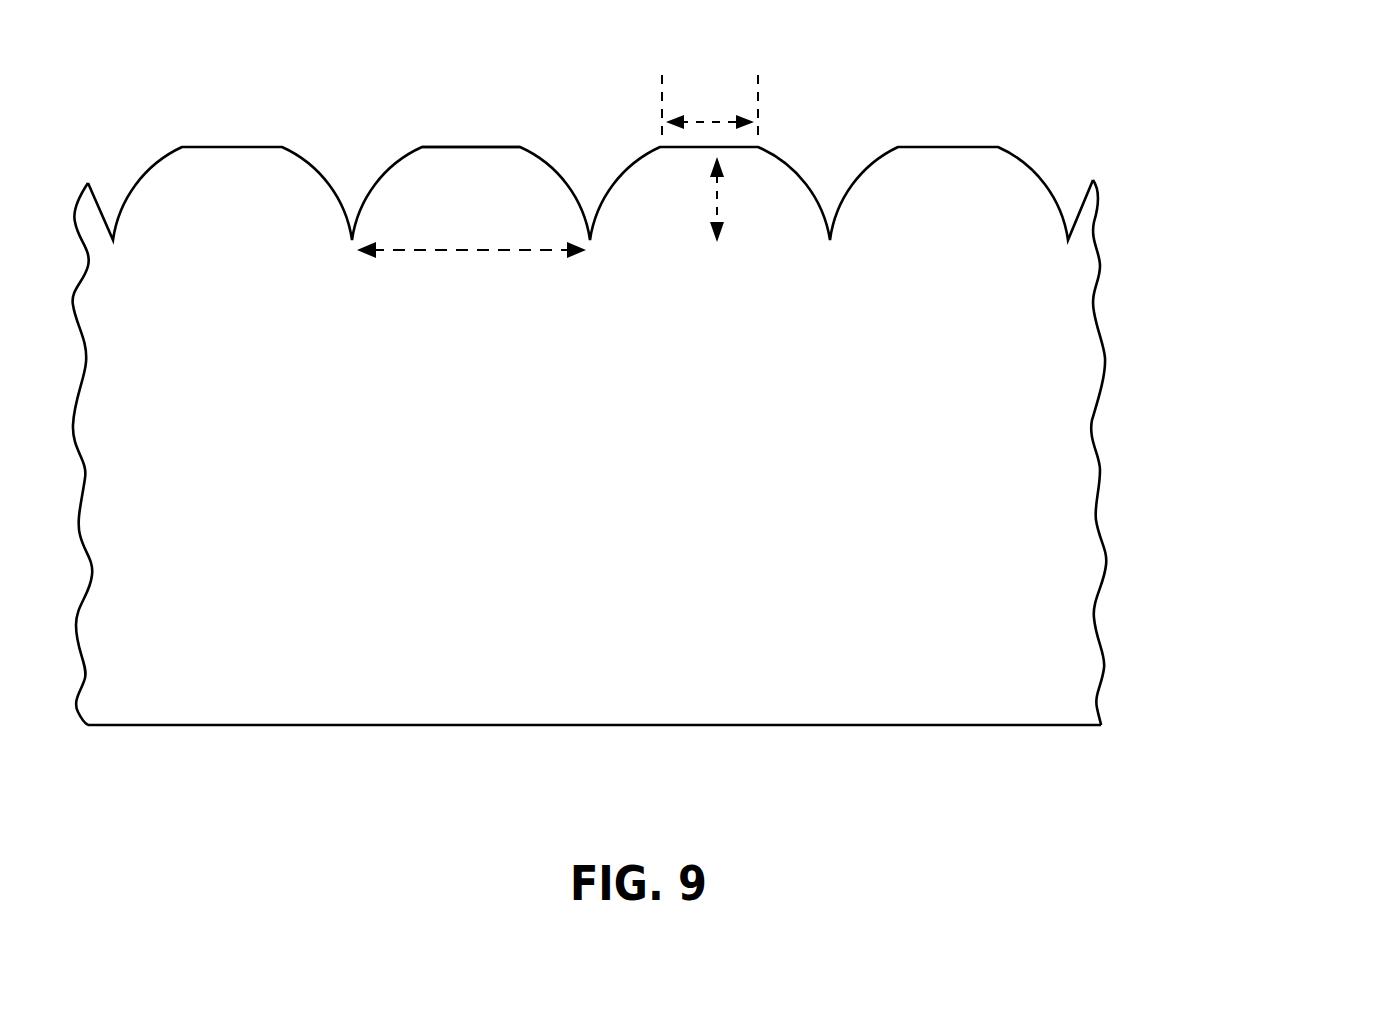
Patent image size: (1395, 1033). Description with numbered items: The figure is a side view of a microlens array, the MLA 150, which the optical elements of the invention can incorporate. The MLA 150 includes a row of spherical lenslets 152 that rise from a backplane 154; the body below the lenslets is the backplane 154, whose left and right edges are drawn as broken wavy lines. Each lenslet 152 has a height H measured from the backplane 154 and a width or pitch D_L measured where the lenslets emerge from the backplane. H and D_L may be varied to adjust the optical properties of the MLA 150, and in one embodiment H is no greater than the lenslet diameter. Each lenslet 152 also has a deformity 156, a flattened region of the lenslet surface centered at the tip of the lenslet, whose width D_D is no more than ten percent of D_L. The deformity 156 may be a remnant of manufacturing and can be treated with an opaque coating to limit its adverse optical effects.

The MLA 150 is at (734, 381).
The spherical lenslets 152 is at (1032, 165).
The backplane 154 is at (1105, 358).
The deformity 156 is at (452, 145).